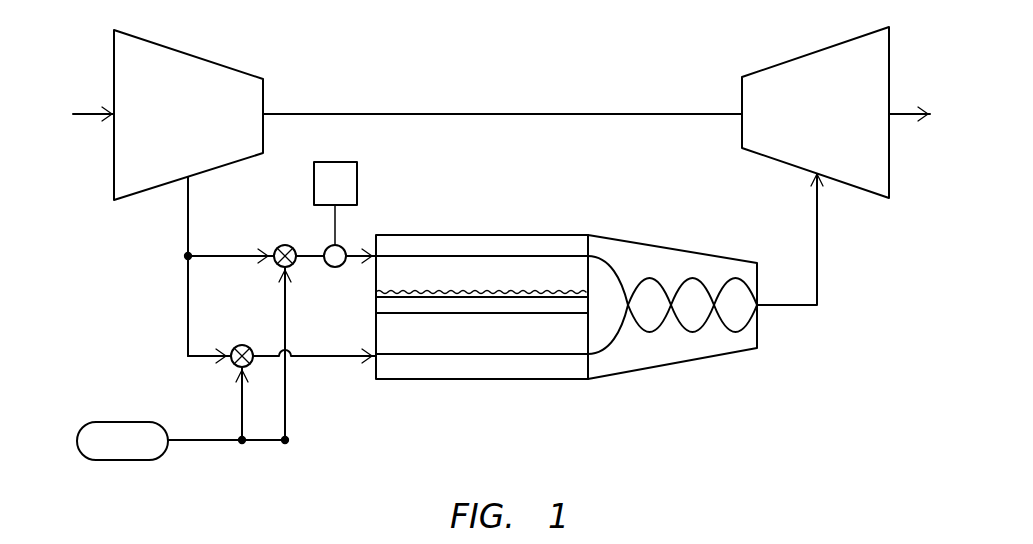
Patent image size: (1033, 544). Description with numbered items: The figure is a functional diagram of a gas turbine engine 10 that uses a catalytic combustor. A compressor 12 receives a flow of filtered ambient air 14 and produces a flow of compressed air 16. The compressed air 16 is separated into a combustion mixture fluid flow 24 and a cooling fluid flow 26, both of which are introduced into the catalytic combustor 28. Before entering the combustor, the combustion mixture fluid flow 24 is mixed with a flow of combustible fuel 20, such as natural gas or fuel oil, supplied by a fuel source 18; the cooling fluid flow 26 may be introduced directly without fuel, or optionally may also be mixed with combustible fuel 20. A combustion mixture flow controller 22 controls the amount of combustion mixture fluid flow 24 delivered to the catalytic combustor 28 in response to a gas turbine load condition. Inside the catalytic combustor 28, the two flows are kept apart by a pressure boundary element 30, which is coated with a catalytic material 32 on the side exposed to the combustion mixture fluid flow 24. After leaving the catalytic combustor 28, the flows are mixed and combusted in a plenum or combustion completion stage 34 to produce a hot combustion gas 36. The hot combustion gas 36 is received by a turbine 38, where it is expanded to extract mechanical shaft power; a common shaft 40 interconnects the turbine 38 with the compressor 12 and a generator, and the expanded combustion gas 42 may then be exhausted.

The gas turbine engine 10 is at (377, 29).
The compressor 12 is at (198, 128).
The filtered ambient air 14 is at (90, 117).
The compressed air 16 is at (188, 229).
The fuel source 18 is at (122, 422).
The combustible fuel 20 is at (190, 441).
The combustion mixture flow controller 22 is at (348, 162).
The combustion mixture fluid flow 24 is at (222, 255).
The cooling fluid flow 26 is at (188, 306).
The catalytic combustor 28 is at (557, 236).
The pressure boundary element 30 is at (422, 313).
The catalytic material 32 is at (503, 290).
The combustion completion stage 34 is at (673, 365).
The hot combustion gas 36 is at (788, 307).
The turbine 38 is at (837, 128).
The common shaft 40 is at (505, 113).
The expanded combustion gas 42 is at (900, 118).